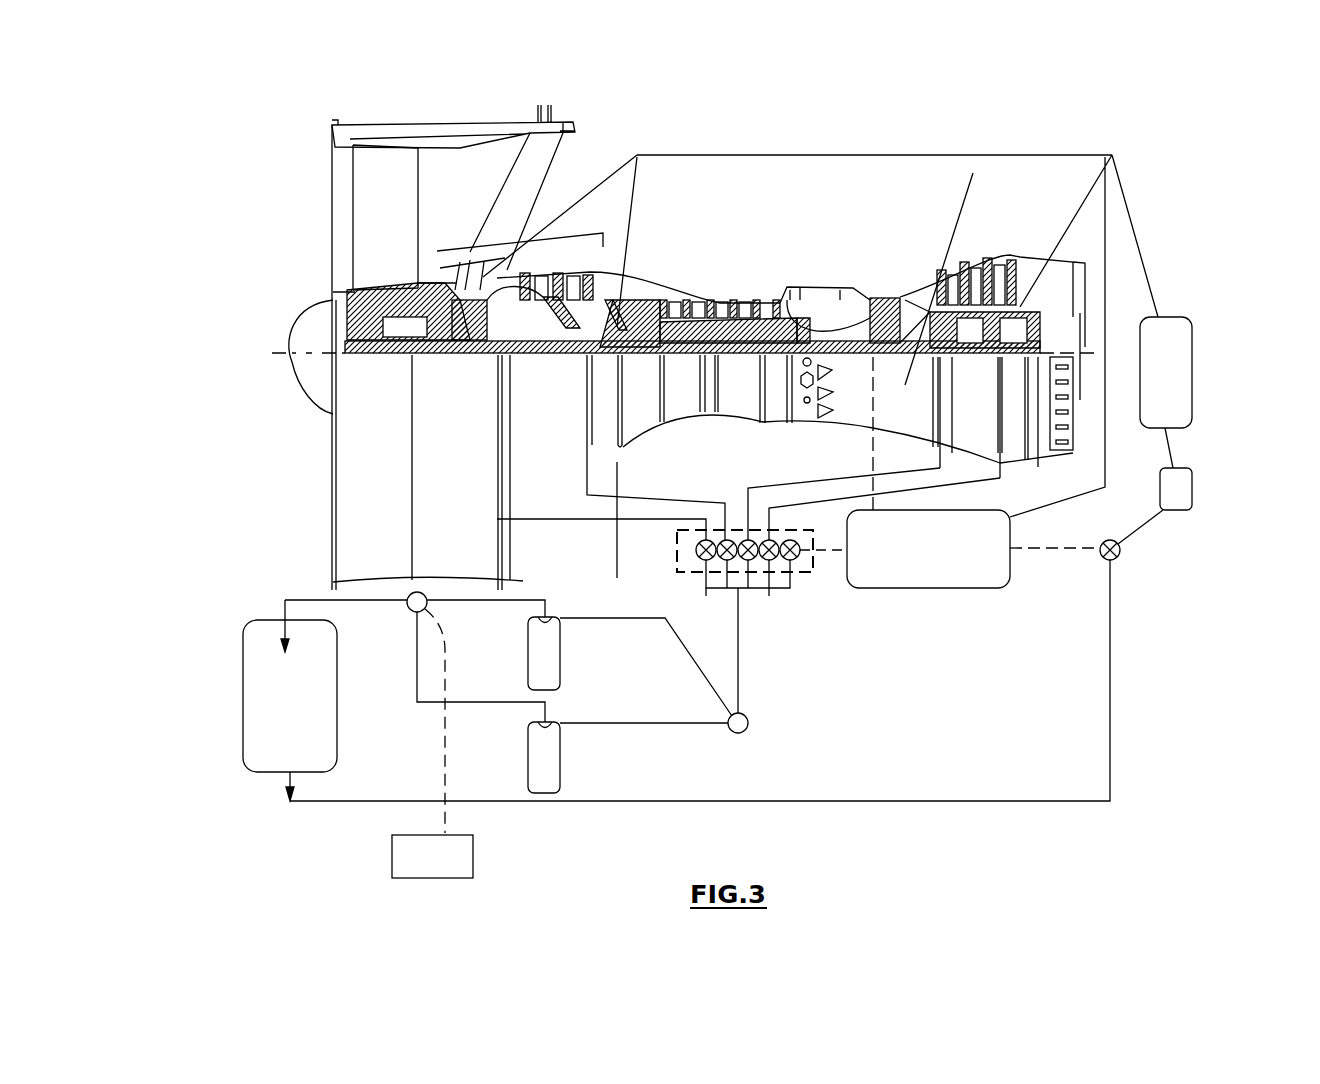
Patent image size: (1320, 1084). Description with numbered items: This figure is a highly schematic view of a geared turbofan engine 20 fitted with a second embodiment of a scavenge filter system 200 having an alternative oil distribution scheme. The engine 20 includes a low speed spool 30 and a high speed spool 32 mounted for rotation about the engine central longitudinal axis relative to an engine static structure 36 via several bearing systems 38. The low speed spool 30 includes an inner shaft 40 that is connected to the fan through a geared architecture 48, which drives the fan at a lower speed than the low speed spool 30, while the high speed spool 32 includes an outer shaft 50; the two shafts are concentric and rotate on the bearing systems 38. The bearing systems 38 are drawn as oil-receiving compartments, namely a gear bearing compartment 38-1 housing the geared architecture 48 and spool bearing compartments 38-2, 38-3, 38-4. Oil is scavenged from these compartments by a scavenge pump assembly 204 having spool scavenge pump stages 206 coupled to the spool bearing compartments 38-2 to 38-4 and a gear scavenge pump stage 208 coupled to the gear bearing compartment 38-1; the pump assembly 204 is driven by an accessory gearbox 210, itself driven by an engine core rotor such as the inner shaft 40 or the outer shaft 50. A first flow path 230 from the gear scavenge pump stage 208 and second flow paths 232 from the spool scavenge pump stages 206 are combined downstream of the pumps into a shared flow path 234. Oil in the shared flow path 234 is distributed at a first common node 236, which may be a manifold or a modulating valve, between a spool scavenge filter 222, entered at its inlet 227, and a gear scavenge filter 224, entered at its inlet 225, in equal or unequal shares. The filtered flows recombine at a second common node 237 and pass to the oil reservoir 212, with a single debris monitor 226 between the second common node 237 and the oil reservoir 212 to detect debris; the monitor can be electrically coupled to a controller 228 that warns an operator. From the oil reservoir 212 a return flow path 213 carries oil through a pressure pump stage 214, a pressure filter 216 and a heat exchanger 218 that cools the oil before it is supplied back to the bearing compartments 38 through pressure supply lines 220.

The gas turbine engine 20 is at (880, 177).
The scavenge filter system 200 is at (234, 497).
The low speed spool 30 is at (743, 356).
The high speed spool 32 is at (768, 328).
The engine static structure 36 is at (773, 424).
The bearing systems 38 is at (900, 365).
The gear bearing compartment 38-1 is at (532, 397).
The spool bearing compartment 38-2 is at (672, 450).
The spool bearing compartment 38-3 is at (932, 256).
The spool bearing compartment 38-4 is at (960, 403).
The inner shaft 40 is at (635, 423).
The geared architecture 48 is at (481, 354).
The outer shaft 50 is at (817, 343).
The scavenge pump assembly 204 is at (803, 580).
The spool scavenge pump stages 206 is at (769, 540).
The gear scavenge pump stage 208 is at (697, 552).
The accessory gearbox 210 is at (963, 590).
The oil reservoir 212 is at (243, 697).
The return flow path 213 is at (938, 802).
The pressure pump stage 214 is at (1122, 550).
The pressure filter 216 is at (1193, 490).
The heat exchanger 218 is at (1193, 376).
The pressure supply lines 220 is at (973, 173).
The spool scavenge filter 222 is at (560, 758).
The gear scavenge filter 224 is at (560, 657).
The inlet of gear scavenge filter 225 is at (571, 617).
The debris monitor 226 is at (407, 608).
The inlet of spool scavenge filter 227 is at (571, 722).
The controller 228 is at (392, 857).
The first flow path 230 is at (707, 585).
The second flow paths 232 is at (762, 582).
The shared flow path 234 is at (740, 676).
The first common node 236 is at (749, 727).
The second common node 237 is at (419, 592).